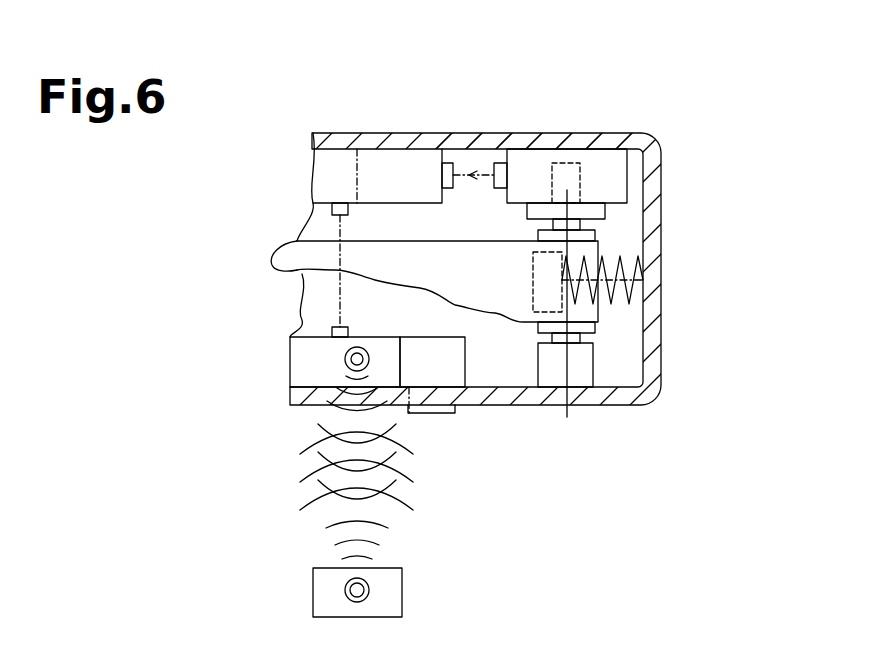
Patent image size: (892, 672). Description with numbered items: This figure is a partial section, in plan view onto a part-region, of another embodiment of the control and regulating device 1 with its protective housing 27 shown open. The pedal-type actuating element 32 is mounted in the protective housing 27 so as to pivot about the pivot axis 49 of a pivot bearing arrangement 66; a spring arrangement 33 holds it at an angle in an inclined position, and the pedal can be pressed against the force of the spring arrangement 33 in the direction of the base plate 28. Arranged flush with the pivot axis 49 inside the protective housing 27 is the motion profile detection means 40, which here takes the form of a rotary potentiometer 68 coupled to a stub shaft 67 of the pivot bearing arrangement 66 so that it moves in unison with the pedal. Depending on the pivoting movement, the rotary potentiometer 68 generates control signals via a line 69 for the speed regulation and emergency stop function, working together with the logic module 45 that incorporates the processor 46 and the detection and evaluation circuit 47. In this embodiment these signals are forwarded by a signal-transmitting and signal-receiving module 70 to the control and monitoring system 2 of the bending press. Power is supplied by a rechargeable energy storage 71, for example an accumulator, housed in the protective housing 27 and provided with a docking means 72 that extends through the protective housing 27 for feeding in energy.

The control and regulating device 1 is at (683, 267).
The control and monitoring system 2 is at (298, 560).
The protective housing 27 is at (576, 118).
The base plate 28 is at (303, 298).
The pedal-type actuating element 32 is at (283, 258).
The spring arrangement 33 is at (625, 313).
The motion profile detection means 40 is at (643, 177).
The logic module 45 is at (397, 173).
The processor 46 is at (388, 158).
The detection and evaluation circuit 47 is at (336, 143).
The pivot axis 49 is at (568, 366).
The pivot bearing arrangement 66 is at (600, 362).
The stub shaft 67 is at (568, 170).
The rotary potentiometer 68 is at (607, 175).
The line 69 is at (508, 133).
The signal-transmitting and signal-receiving module 70 is at (303, 360).
The rechargeable energy storage 71 is at (453, 352).
The docking means 72 is at (452, 422).